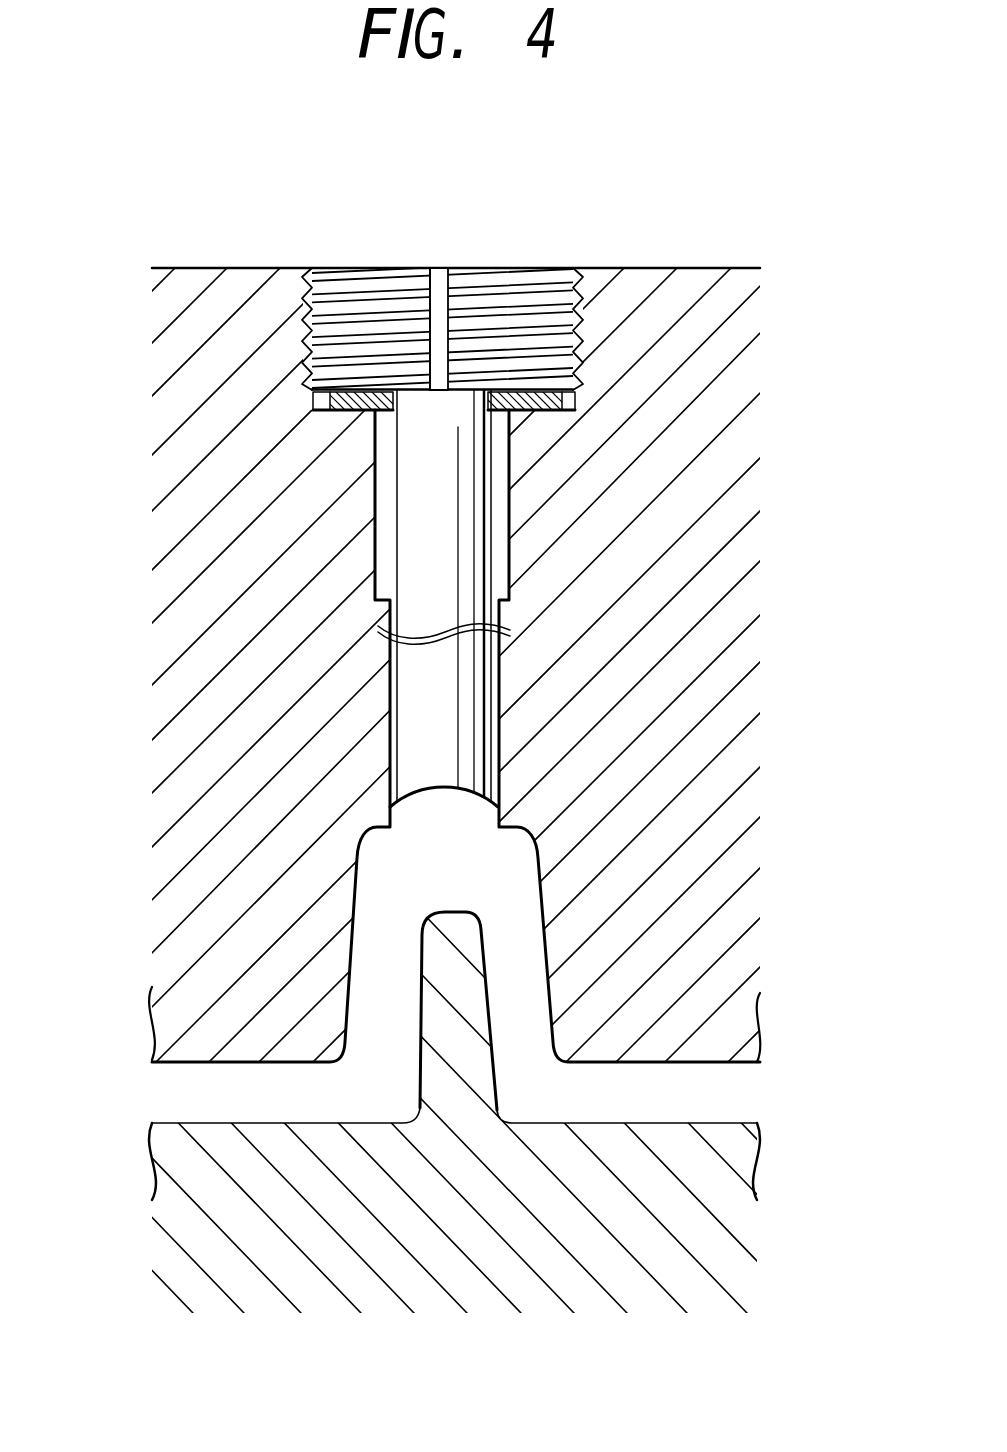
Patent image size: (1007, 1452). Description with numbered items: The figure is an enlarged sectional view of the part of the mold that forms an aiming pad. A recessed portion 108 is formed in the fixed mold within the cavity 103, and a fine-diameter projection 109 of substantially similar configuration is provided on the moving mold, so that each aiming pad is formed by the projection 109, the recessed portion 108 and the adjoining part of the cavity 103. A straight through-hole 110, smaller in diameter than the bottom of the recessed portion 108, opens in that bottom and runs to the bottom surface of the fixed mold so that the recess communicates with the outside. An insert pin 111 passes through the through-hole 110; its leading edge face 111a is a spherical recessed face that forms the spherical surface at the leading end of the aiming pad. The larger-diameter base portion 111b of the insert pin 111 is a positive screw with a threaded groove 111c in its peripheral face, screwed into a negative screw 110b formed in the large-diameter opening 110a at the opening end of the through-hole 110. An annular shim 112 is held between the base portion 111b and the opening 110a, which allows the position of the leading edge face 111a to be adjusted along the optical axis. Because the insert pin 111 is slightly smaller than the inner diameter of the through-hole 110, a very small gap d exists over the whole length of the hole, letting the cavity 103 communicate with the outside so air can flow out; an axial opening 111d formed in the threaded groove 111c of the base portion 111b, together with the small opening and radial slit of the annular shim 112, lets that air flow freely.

The cavity 103 is at (697, 1088).
The recessed portion 108 is at (542, 885).
The fine-diameter projection 109 is at (470, 1060).
The through-hole 110 is at (500, 722).
The large-diameter opening 110a is at (390, 307).
The negative screw 110b is at (312, 330).
The insert pin 111 is at (425, 552).
The leading edge face 111a is at (445, 788).
The base portion 111b is at (522, 290).
The threaded groove 111c is at (585, 318).
The axial opening 111d is at (437, 303).
The annular shim 112 is at (537, 413).
The gap d is at (390, 674).